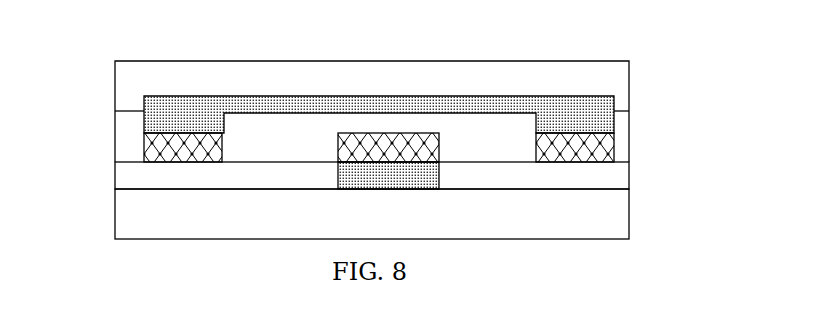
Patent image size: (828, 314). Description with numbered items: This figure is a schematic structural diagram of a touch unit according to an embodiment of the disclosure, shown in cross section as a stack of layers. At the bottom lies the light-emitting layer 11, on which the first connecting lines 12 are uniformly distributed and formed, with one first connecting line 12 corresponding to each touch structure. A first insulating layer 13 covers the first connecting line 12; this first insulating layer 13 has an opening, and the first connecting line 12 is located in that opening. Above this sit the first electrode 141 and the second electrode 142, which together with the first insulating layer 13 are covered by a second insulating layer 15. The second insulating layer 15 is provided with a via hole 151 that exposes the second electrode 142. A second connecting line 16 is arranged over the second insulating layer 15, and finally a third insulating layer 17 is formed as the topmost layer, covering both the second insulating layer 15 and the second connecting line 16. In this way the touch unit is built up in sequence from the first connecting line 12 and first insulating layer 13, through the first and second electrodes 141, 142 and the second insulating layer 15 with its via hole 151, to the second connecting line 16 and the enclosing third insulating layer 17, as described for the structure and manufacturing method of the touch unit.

The light-emitting layer 11 is at (334, 214).
The first connecting line 12 is at (351, 161).
The first insulating layer 13 is at (326, 161).
The first electrode 141 is at (373, 97).
The second electrode 142 is at (127, 137).
The second insulating layer 15 is at (419, 124).
The via hole 151 is at (616, 118).
The second connecting line 16 is at (348, 97).
The third insulating layer 17 is at (402, 99).